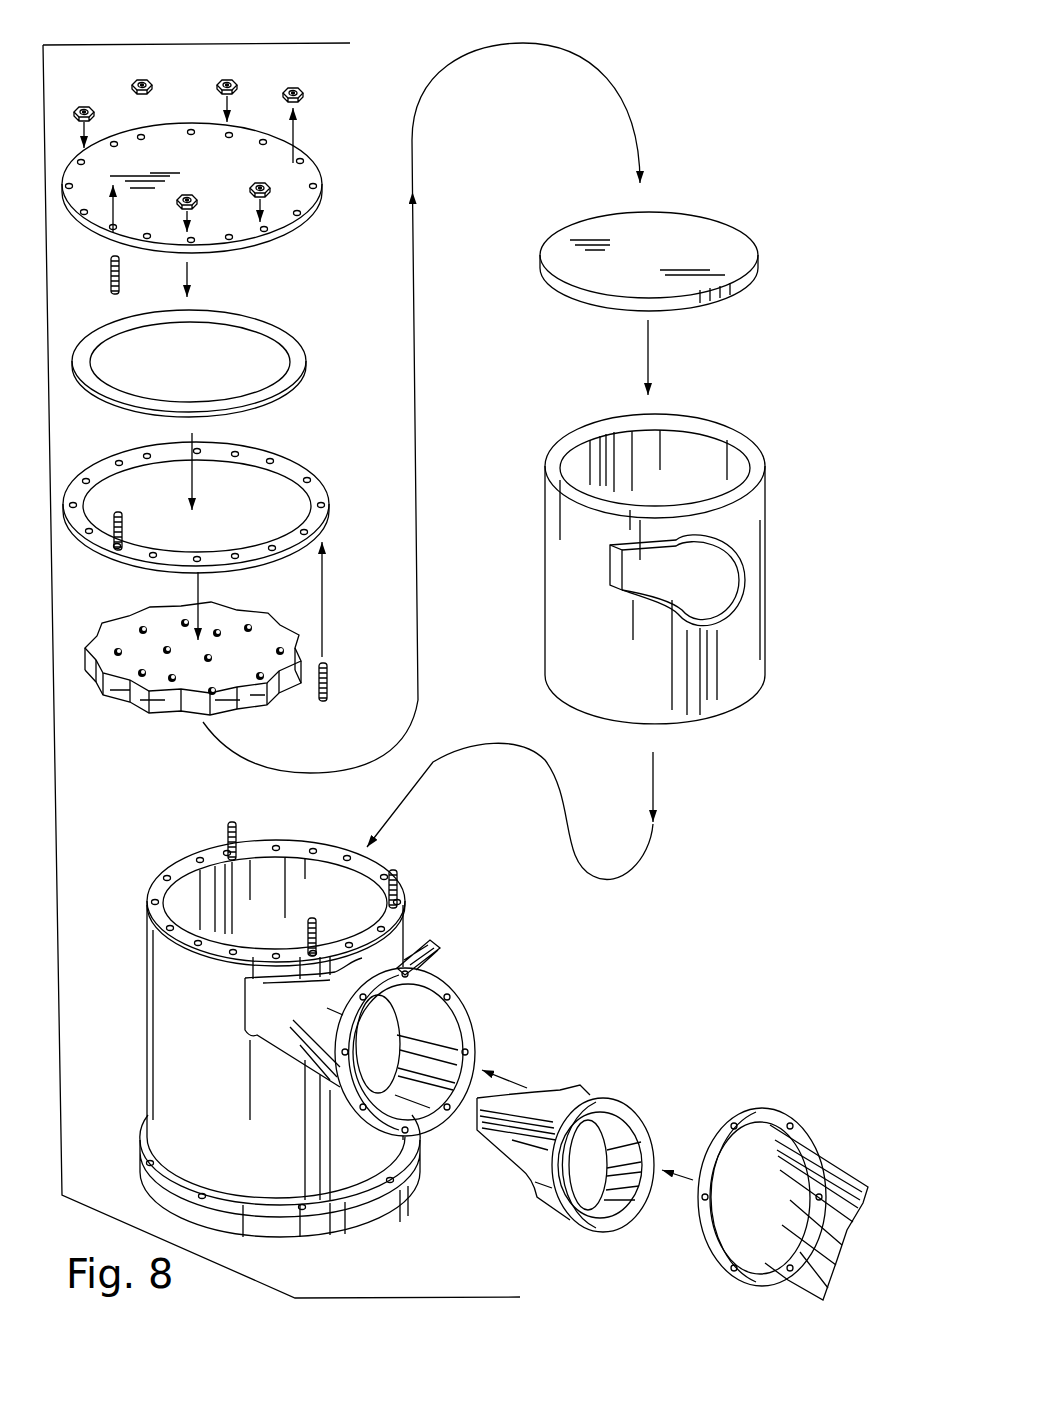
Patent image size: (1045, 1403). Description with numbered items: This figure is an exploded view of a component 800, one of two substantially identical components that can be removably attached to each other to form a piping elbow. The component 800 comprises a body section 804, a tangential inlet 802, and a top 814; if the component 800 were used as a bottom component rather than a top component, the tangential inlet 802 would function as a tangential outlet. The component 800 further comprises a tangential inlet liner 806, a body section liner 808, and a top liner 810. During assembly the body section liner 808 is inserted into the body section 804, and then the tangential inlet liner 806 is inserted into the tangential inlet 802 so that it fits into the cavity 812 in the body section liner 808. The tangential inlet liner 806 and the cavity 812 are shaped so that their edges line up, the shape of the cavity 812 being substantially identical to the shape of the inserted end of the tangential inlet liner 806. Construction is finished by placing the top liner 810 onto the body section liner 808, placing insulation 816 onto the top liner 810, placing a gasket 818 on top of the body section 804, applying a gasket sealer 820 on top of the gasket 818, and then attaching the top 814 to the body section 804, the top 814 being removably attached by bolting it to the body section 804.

The component 800 is at (716, 132).
The tangential inlet 802 is at (440, 1022).
The body section 804 is at (390, 941).
The tangential inlet liner 806 is at (553, 1110).
The body section liner 808 is at (572, 522).
The top liner 810 is at (695, 253).
The cavity 812 is at (660, 572).
The top 814 is at (252, 177).
The insulation 816 is at (195, 675).
The gasket 818 is at (310, 473).
The gasket sealer 820 is at (275, 335).